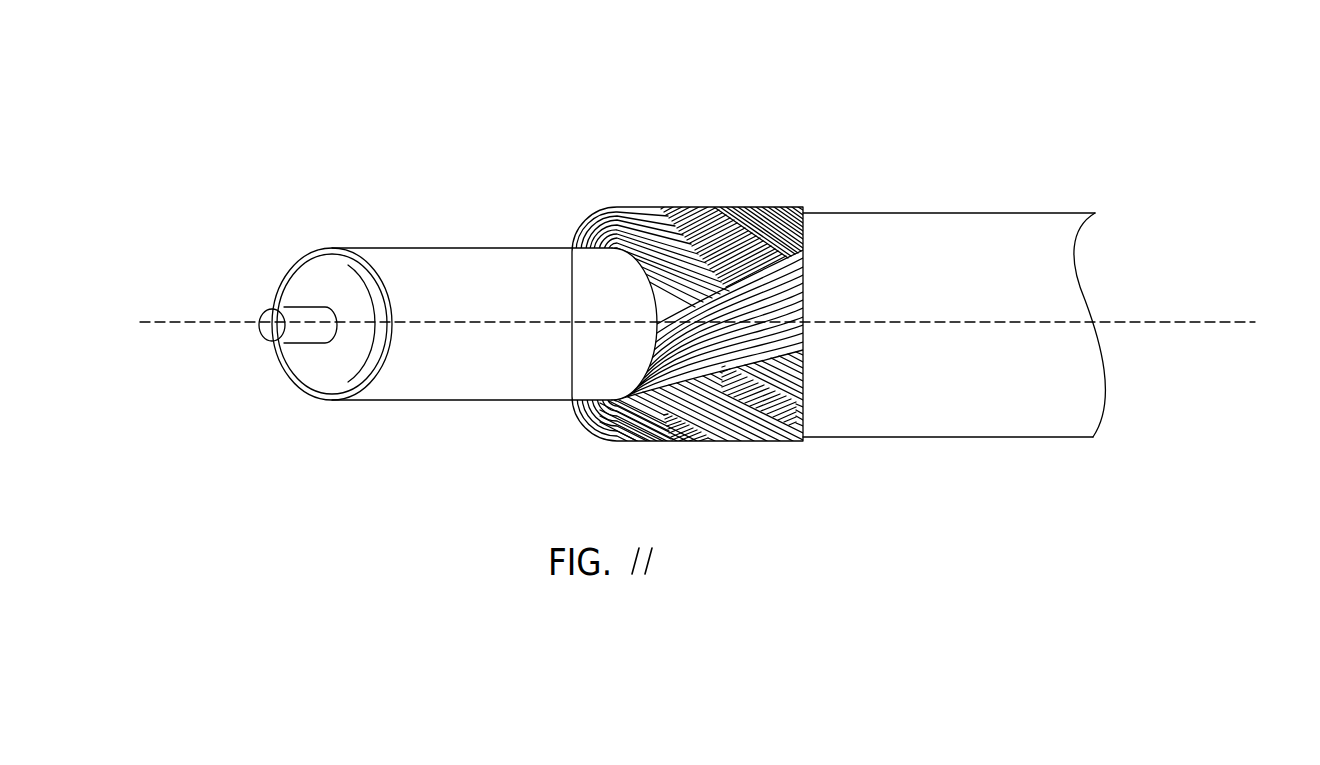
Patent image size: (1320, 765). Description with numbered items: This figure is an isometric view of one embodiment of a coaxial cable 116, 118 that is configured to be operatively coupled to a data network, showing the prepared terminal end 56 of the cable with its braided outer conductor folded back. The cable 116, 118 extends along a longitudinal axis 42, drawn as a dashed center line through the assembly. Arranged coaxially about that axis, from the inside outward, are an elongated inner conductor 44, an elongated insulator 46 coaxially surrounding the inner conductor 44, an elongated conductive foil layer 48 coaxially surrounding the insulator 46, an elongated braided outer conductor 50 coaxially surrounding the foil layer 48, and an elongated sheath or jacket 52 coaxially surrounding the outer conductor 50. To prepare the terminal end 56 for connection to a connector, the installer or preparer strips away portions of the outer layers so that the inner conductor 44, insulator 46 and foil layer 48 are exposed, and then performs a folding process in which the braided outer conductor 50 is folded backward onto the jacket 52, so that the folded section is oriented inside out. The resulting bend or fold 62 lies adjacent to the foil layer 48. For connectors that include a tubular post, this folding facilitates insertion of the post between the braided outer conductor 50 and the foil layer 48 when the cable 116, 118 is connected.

The longitudinal axis 42 is at (1144, 318).
The inner conductor 44 is at (272, 316).
The insulator 46 is at (295, 283).
The foil layer 48 is at (402, 262).
The outer conductor 50 is at (740, 225).
The jacket 52 is at (877, 225).
The terminal end 56 is at (660, 83).
The fold 62 is at (587, 230).
The coaxial cable 116 is at (697, 245).
The coaxial cable 118 is at (697, 245).